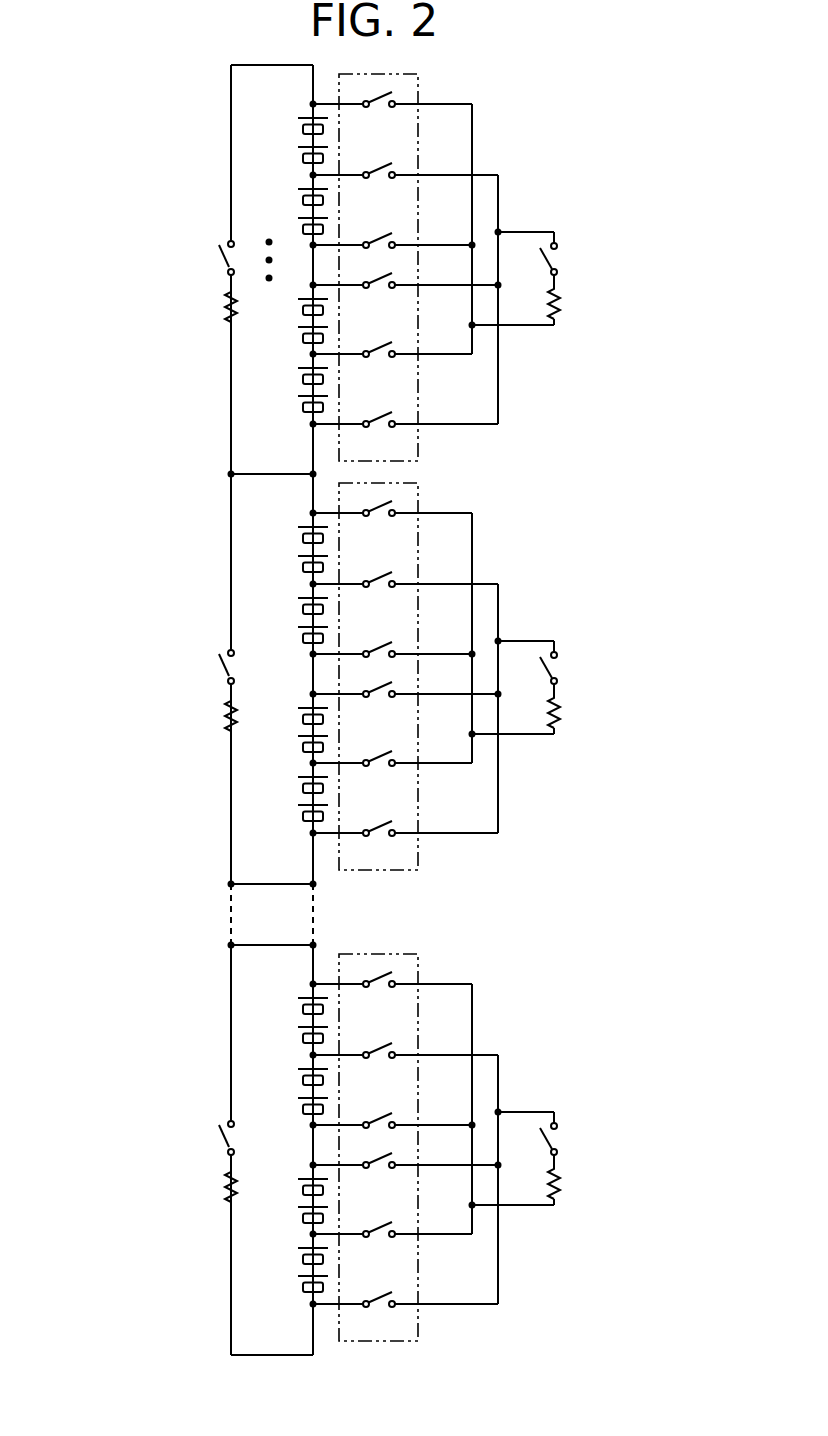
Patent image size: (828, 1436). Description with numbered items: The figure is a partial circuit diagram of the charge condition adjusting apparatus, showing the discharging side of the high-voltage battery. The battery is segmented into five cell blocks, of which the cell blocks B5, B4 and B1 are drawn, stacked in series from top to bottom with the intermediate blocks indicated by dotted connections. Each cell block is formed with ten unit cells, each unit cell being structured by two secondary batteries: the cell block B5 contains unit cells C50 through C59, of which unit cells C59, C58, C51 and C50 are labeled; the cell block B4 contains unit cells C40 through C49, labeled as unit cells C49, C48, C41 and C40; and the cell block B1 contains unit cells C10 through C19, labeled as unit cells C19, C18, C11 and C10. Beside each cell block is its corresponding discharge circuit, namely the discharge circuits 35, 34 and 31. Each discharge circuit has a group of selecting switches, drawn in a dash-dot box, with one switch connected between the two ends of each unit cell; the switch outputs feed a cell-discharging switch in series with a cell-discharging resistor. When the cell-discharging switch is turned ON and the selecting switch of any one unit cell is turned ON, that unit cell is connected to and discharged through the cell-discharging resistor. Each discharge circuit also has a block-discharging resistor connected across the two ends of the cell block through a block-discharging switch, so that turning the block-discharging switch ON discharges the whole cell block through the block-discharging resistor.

The discharge circuit 35 is at (567, 86).
The discharge circuit 34 is at (476, 669).
The discharge circuit 31 is at (476, 1140).
The cell block B5 is at (189, 102).
The cell block B4 is at (189, 511).
The cell block B1 is at (189, 982).
The unit cell C59 is at (232, 134).
The unit cell C58 is at (232, 204).
The unit cell C51 is at (232, 335).
The unit cell C50 is at (232, 400).
The unit cell C49 is at (232, 543).
The unit cell C48 is at (232, 613).
The unit cell C41 is at (232, 744).
The unit cell C40 is at (232, 809).
The unit cell C19 is at (232, 1014).
The unit cell C18 is at (232, 1084).
The unit cell C11 is at (232, 1215).
The unit cell C10 is at (232, 1280).